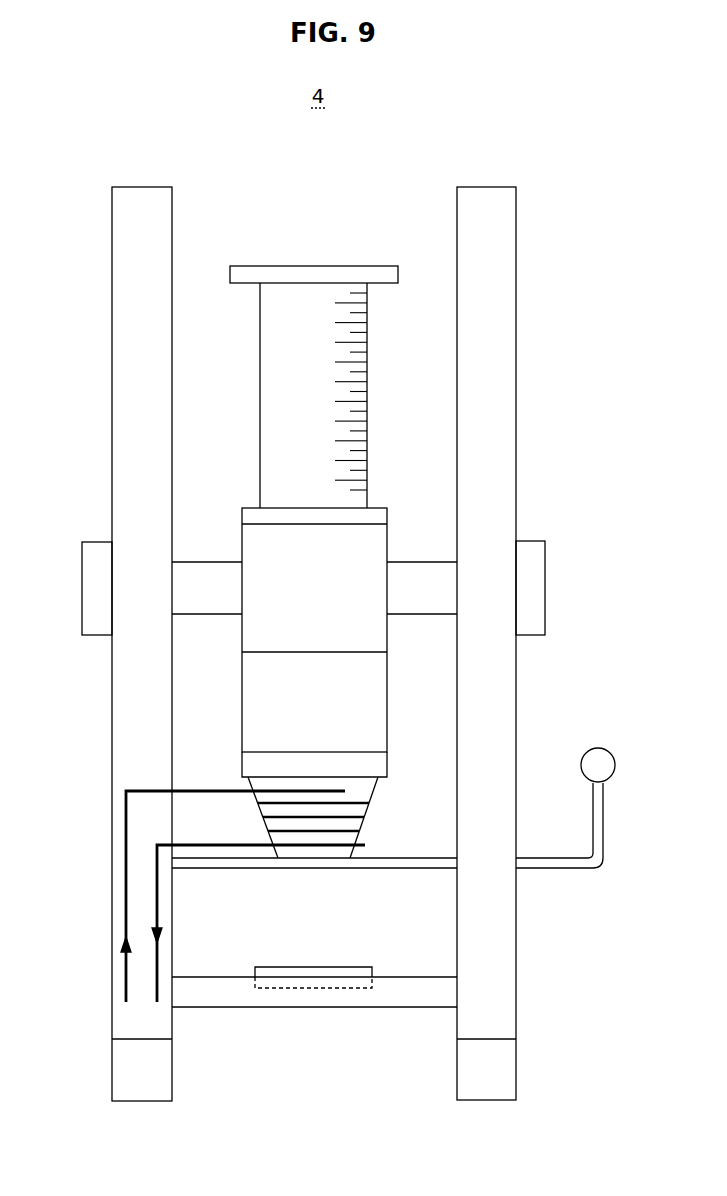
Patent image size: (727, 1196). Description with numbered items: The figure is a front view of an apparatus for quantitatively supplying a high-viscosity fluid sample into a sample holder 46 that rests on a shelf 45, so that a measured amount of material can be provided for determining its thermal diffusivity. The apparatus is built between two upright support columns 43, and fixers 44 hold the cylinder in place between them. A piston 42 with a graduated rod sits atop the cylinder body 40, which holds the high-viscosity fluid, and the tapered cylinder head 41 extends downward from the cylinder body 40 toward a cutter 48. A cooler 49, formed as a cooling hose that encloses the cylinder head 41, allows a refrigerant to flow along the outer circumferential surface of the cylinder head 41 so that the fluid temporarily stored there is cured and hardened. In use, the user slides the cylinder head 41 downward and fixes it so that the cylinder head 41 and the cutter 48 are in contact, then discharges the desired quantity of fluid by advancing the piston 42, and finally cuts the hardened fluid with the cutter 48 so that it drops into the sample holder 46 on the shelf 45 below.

The cylinder body 40 is at (360, 715).
The cylinder head 41 is at (303, 852).
The piston 42 is at (283, 366).
The support columns 43 is at (472, 210).
The fixers 44 is at (420, 570).
The shelf 45 is at (395, 995).
The sample holder 46 is at (275, 970).
The cutter 48 is at (376, 868).
The cooler 49 is at (152, 790).